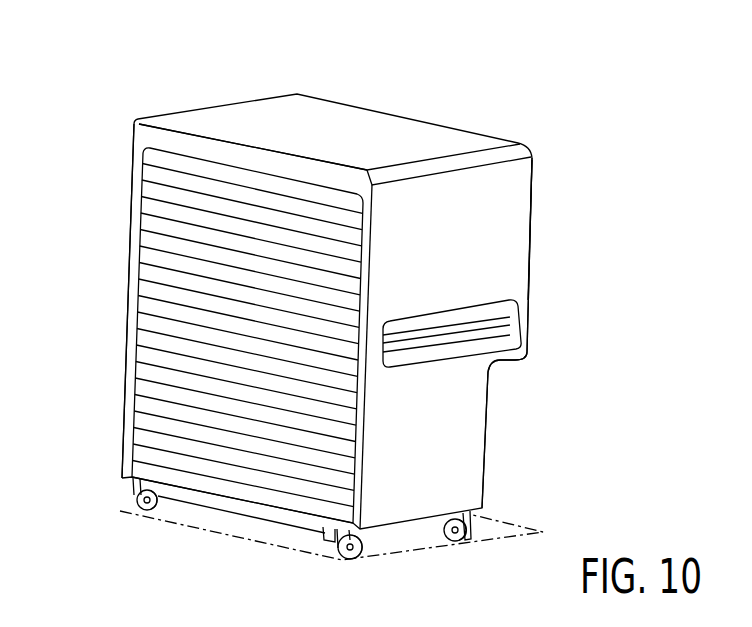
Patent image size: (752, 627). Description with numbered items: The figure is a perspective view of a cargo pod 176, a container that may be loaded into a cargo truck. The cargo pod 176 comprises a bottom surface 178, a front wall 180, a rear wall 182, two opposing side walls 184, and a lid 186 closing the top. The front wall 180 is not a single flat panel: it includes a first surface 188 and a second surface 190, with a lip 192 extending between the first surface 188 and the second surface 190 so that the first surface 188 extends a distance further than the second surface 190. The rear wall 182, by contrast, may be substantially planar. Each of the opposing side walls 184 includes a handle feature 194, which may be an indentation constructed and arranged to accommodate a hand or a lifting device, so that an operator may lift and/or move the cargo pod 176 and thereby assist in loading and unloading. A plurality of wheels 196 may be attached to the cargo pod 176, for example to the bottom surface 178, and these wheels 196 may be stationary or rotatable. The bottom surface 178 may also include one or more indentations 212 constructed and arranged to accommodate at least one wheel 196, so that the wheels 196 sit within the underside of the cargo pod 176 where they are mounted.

The cargo pod 176 is at (425, 90).
The bottom surface 178 is at (213, 520).
The front wall 180 is at (528, 260).
The rear wall 182 is at (172, 347).
The opposing side walls 184 is at (128, 297).
The lid 186 is at (278, 120).
The first surface 188 is at (530, 215).
The second surface 190 is at (487, 437).
The lip 192 is at (498, 360).
The handle feature 194 is at (490, 315).
The wheels 196 is at (152, 510).
The indentations 212 is at (125, 483).